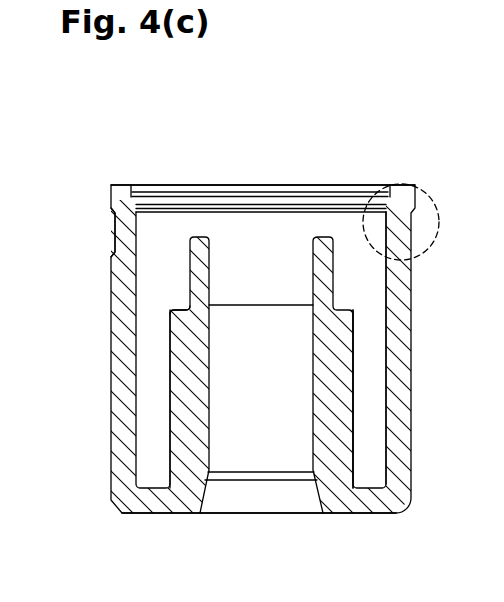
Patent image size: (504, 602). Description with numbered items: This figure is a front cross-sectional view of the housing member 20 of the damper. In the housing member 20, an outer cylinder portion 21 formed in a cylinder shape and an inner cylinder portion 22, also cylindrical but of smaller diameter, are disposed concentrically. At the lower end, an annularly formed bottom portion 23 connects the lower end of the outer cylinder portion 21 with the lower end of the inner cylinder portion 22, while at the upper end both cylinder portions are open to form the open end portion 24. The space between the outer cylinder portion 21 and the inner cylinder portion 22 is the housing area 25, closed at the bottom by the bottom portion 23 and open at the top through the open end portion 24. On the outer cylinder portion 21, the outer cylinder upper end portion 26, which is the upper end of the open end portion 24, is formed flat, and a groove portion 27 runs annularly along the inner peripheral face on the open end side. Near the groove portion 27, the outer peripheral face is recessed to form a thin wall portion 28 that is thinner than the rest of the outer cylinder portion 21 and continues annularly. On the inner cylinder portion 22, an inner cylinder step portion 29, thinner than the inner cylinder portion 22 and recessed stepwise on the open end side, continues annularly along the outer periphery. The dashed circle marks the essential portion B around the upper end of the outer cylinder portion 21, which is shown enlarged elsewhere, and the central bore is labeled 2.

The through hole / bore 2 is at (268, 457).
The housing member 20 is at (88, 172).
The outer cylinder portion 21 is at (118, 360).
The inner cylinder portion 22 is at (178, 393).
The bottom portion 23 is at (157, 503).
The open end portion 24 is at (277, 185).
The housing area 25 is at (368, 285).
The outer cylinder upper end portion 26 is at (120, 188).
The groove portion 27 is at (150, 195).
The thin wall portion 28 is at (114, 233).
The inner cylinder step portion 29 is at (188, 305).
The essential portion B is at (414, 186).